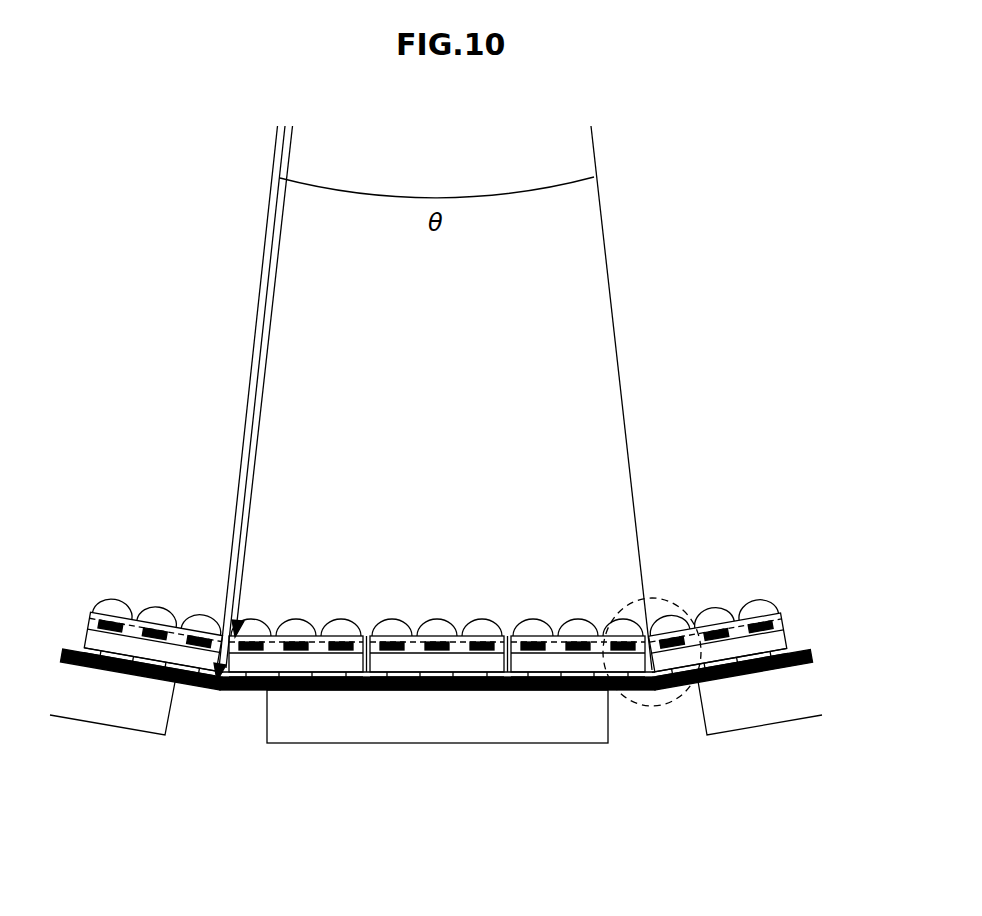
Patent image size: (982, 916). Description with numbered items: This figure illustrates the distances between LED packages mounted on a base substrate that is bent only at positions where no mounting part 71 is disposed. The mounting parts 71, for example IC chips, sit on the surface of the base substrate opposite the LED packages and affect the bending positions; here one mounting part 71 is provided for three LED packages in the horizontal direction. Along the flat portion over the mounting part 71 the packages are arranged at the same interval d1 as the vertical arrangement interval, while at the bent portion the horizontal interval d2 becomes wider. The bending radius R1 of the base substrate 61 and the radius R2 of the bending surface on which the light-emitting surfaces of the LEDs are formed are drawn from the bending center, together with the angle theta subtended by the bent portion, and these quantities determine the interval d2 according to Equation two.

The light source unit 61 is at (60, 649).
The mounting part 71 is at (403, 743).
The bending radius of the base substrate R1 is at (247, 403).
The radius of the bending surface R2 is at (266, 381).
The vertical arrangement interval d1 is at (438, 629).
The horizontal arrangement interval d2 is at (652, 638).